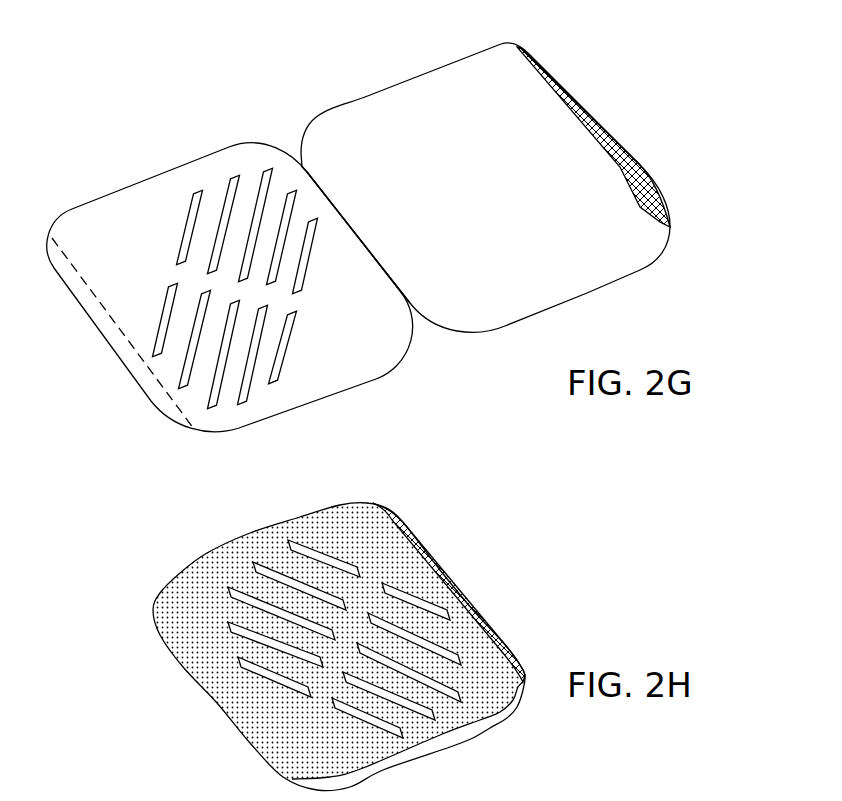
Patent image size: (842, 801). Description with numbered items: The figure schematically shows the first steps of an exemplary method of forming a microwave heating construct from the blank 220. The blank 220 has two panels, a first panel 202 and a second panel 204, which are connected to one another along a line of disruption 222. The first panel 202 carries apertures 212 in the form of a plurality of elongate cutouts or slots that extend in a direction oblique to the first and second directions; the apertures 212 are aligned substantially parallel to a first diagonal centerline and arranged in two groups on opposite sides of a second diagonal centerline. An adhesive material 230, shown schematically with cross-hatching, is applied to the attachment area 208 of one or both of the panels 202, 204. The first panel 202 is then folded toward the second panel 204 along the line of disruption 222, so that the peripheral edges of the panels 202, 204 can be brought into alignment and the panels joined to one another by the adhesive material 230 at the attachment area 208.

In FIG. 2G, the panel 202 is at (151, 181).
In FIG. 2H, the panel 202 is at (193, 568).
In FIG. 2G, the panel 204 is at (402, 88).
In FIG. 2G, the attachment area 208 is at (72, 293).
In FIG. 2G, the apertures 212 is at (183, 232).
In FIG. 2H, the apertures 212 is at (363, 725).
In FIG. 2G, the blank 220 is at (666, 64).
In FIG. 2G, the line of disruption 222 is at (373, 252).
In FIG. 2G, the adhesive material 230 is at (642, 177).
In FIG. 2H, the adhesive material 230 is at (487, 625).